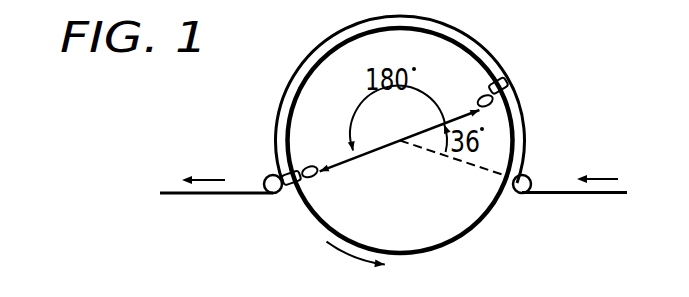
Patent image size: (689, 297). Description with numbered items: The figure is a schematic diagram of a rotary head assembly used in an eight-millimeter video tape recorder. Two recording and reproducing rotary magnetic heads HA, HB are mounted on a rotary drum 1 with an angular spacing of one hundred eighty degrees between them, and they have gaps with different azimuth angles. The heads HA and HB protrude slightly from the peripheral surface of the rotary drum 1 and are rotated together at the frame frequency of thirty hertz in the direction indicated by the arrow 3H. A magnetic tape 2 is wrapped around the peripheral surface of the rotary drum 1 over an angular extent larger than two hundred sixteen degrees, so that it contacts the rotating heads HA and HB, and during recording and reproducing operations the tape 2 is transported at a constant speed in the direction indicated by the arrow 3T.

The rotary drum 1 is at (473, 225).
The magnetic tape 2 is at (607, 193).
The arrow indicating head rotation direction 3H is at (353, 257).
The arrow indicating tape transport direction 3T is at (207, 180).
The rotary magnetic head HA is at (497, 71).
The rotary magnetic head HB is at (302, 195).